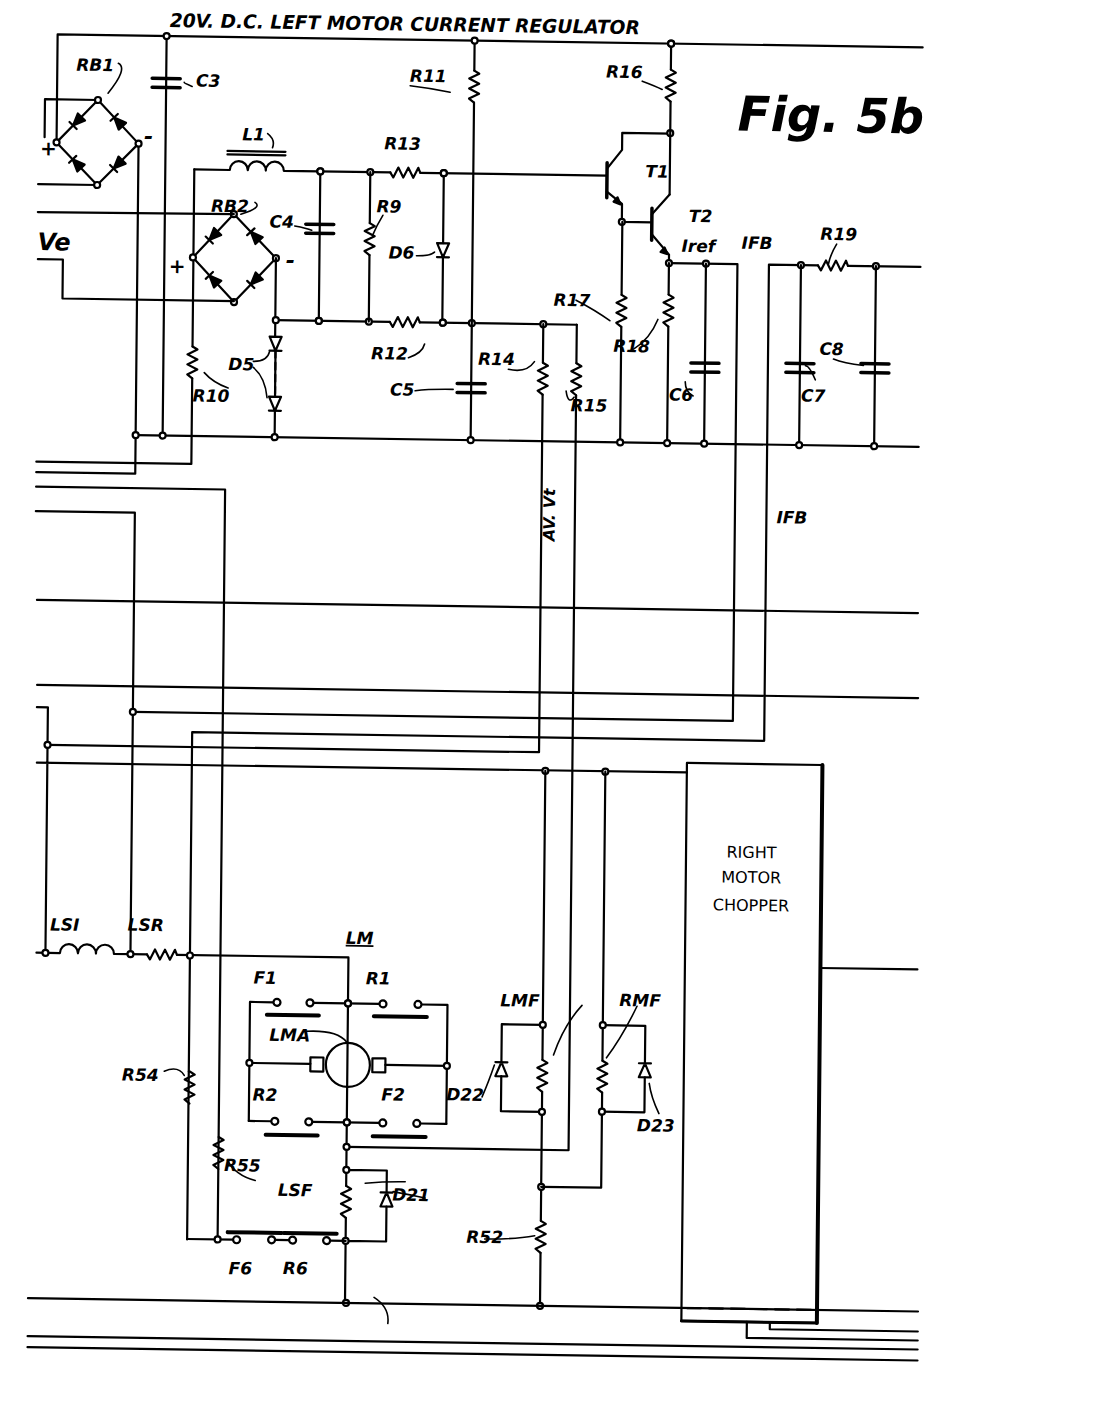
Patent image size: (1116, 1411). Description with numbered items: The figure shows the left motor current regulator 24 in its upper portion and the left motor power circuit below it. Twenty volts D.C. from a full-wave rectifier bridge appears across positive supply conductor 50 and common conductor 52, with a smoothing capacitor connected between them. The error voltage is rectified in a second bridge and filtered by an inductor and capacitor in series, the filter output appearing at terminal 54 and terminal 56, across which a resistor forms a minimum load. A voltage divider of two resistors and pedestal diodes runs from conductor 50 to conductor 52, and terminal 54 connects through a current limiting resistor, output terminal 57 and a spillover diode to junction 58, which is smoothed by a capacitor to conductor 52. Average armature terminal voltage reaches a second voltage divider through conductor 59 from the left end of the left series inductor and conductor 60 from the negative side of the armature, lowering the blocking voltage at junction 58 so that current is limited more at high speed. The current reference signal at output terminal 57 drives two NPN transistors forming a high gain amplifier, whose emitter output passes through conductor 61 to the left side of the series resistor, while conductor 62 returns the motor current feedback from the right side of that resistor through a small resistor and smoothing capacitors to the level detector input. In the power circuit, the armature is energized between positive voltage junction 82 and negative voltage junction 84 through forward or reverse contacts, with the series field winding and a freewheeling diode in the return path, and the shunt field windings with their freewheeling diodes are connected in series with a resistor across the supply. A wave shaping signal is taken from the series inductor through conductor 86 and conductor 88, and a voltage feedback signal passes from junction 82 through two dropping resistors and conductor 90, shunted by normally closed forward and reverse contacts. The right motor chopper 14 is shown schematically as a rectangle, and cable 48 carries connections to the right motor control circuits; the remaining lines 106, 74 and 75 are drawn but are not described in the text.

The supply conductor 50 is at (122, 42).
The left motor current regulator 24 is at (670, 30).
The terminal 54 is at (315, 172).
The output terminal 57 is at (438, 172).
The terminal 56 is at (315, 328).
The junction 58 is at (439, 328).
The common conductor 52 is at (234, 443).
The conductor 88 is at (132, 557).
The cable 48 is at (349, 607).
The bus line 106 is at (400, 692).
The conductor 86 is at (40, 714).
The conductor 61 is at (190, 720).
The conductor 59 is at (74, 752).
The conductor 62 is at (192, 808).
The conductor 60 is at (574, 656).
The conductor 90 is at (223, 813).
The right motor chopper 14 is at (687, 851).
The positive voltage junction 82 is at (350, 1006).
The negative voltage junction 84 is at (350, 1124).
The negative battery bus 74 is at (418, 1344).
The battery bus 75 is at (506, 1350).